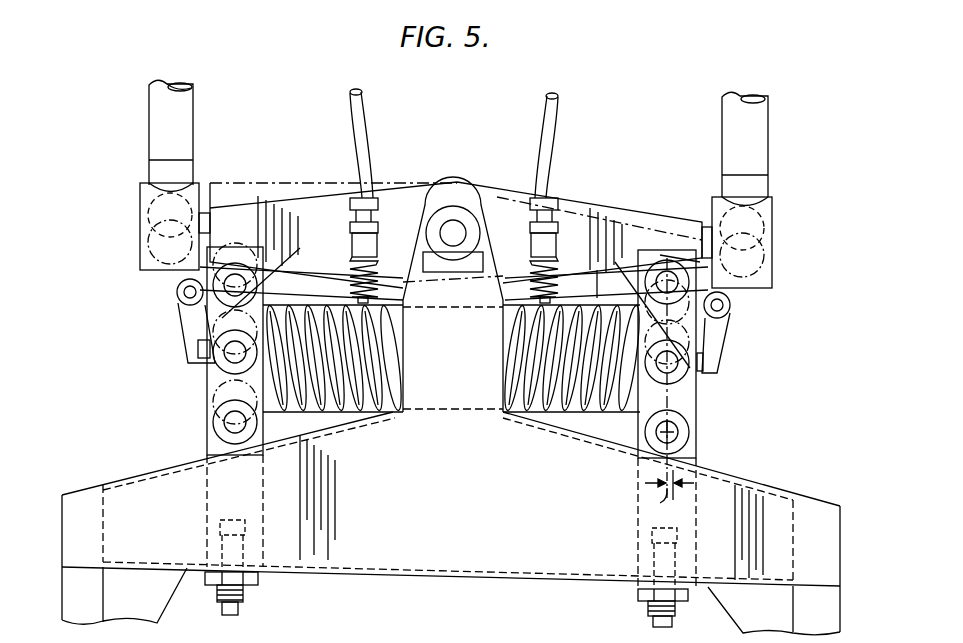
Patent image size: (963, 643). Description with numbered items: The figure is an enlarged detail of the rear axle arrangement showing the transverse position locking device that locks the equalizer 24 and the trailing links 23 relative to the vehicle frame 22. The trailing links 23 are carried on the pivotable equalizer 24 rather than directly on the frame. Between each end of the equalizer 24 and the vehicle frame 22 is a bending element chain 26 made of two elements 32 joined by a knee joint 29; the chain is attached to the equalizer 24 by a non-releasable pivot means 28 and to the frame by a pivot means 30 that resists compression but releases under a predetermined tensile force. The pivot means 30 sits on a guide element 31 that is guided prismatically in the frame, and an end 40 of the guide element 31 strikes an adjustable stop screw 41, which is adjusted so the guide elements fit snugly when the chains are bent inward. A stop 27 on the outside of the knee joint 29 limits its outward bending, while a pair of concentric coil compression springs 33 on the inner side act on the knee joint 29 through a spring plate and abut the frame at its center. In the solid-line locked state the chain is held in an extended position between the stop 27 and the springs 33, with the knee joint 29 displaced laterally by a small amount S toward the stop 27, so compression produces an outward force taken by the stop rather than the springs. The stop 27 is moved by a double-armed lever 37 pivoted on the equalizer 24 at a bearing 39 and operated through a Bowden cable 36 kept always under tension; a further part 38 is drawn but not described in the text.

The vehicle frame 22 is at (782, 512).
The trailing links 23 is at (162, 112).
The equalizer 24 is at (636, 205).
The bending element chain 26 is at (205, 383).
The stop 27 is at (704, 364).
The pivot means 28 is at (667, 274).
The knee joint 29 is at (678, 371).
The pivot means 30 is at (685, 438).
The guide element 31 is at (691, 516).
The elements 32 is at (690, 330).
The coil compression springs 33 is at (330, 403).
The Bowden cable 36 is at (366, 103).
The double-armed lever 37 is at (285, 290).
The arm 38 is at (187, 322).
The bearing 39 is at (177, 292).
The end of the guide element 40 is at (217, 524).
The adjustable stop screw 41 is at (258, 528).